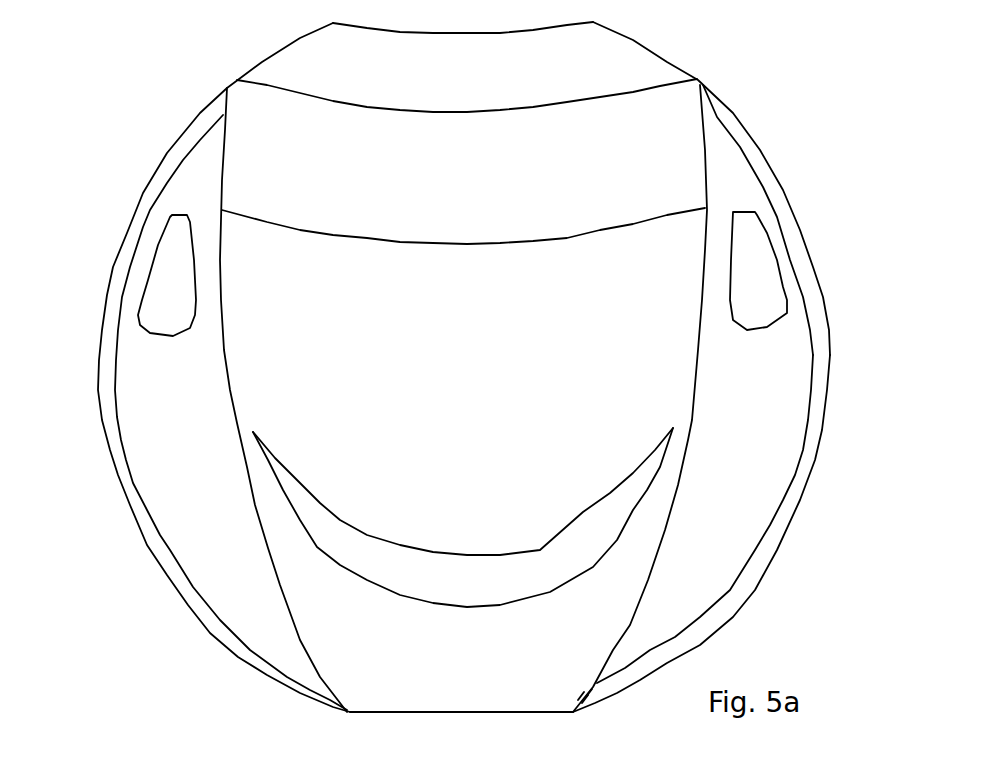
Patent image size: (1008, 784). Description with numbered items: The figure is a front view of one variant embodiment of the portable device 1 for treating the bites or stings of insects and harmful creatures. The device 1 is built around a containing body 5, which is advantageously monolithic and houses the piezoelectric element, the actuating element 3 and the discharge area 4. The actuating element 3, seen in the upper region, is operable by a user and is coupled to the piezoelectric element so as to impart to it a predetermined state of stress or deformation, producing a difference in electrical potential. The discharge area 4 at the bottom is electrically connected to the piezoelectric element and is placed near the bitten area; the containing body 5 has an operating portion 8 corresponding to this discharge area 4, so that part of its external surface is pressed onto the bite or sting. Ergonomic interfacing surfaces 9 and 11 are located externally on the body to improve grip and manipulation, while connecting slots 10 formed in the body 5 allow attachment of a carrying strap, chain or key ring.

The portable device 1 is at (479, 367).
The actuating element 3 is at (625, 65).
The discharge area 4 is at (540, 713).
The containing body 5 is at (750, 117).
The operating portion 8 is at (594, 728).
The ergonomic interfacing surfaces 9 is at (178, 488).
The connecting slots 10 is at (167, 298).
The ergonomic interfacing surfaces 11 is at (593, 198).